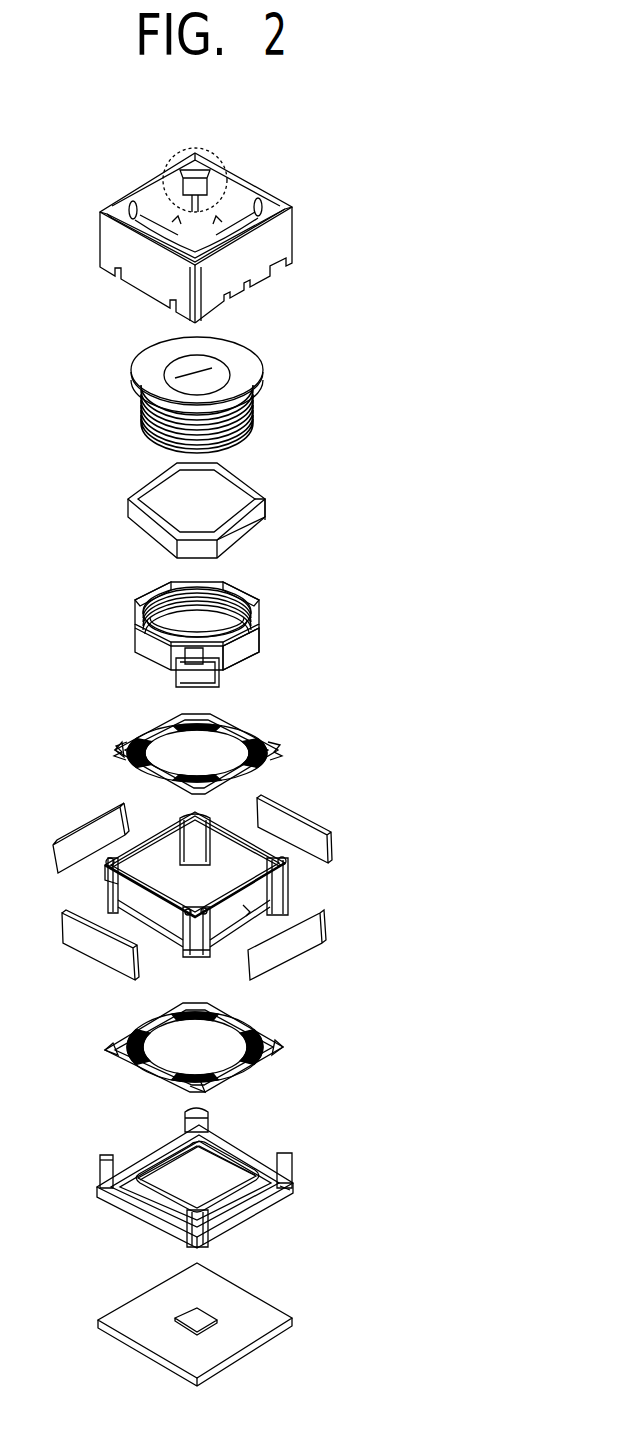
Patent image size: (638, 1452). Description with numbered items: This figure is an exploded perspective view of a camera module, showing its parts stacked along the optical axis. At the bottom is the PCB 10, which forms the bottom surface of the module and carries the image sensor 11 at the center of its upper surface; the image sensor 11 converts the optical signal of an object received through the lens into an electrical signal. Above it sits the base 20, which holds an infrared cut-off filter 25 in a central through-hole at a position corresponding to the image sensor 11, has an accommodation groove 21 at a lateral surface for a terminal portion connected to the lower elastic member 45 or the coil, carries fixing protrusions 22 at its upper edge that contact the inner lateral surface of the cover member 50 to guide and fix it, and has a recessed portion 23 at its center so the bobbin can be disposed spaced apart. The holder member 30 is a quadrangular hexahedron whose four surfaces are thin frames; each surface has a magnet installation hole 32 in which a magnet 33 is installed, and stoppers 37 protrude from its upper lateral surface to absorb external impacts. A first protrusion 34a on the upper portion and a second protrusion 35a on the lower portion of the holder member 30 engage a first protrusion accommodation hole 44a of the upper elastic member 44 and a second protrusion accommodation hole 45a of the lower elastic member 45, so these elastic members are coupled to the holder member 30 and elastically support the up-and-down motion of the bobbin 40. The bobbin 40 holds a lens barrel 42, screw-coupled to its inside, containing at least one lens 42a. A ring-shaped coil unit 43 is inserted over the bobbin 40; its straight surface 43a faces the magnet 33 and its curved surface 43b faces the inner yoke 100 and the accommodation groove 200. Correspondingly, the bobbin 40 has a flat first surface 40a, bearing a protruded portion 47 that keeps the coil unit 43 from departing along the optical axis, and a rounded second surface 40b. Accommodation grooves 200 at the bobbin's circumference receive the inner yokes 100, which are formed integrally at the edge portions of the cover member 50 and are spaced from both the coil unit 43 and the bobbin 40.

The PCB 10 is at (280, 1318).
The image sensor 11 is at (200, 1315).
The base 20 is at (214, 1174).
The accommodation groove 21 is at (293, 1183).
The fixing protrusion 22 is at (100, 1165).
The recessed portion 23 is at (168, 1160).
The infrared cut-off filter 25 is at (215, 1185).
The holder member 30 is at (209, 864).
The magnet installation hole 32 is at (252, 912).
The magnet 33 is at (300, 946).
The first protrusion 34a is at (104, 878).
The second protrusion 35a is at (196, 958).
The stopper 37 is at (203, 812).
The bobbin 40 is at (244, 634).
The first surface 40a is at (245, 655).
The second surface 40b is at (205, 683).
The lens barrel 42 is at (269, 361).
The lens 42a is at (212, 358).
The coil unit 43 is at (240, 490).
The straight surface 43a is at (258, 535).
The curved surface 43b is at (262, 504).
The upper elastic member 44 is at (268, 745).
The first protrusion accommodation hole 44a is at (118, 762).
The lower elastic member 45 is at (270, 1040).
The second protrusion accommodation hole 45a is at (205, 1087).
The protruded portion 47 is at (262, 630).
The cover member 50 is at (282, 243).
The inner yoke 100 is at (205, 192).
The accommodation groove 200 is at (193, 657).